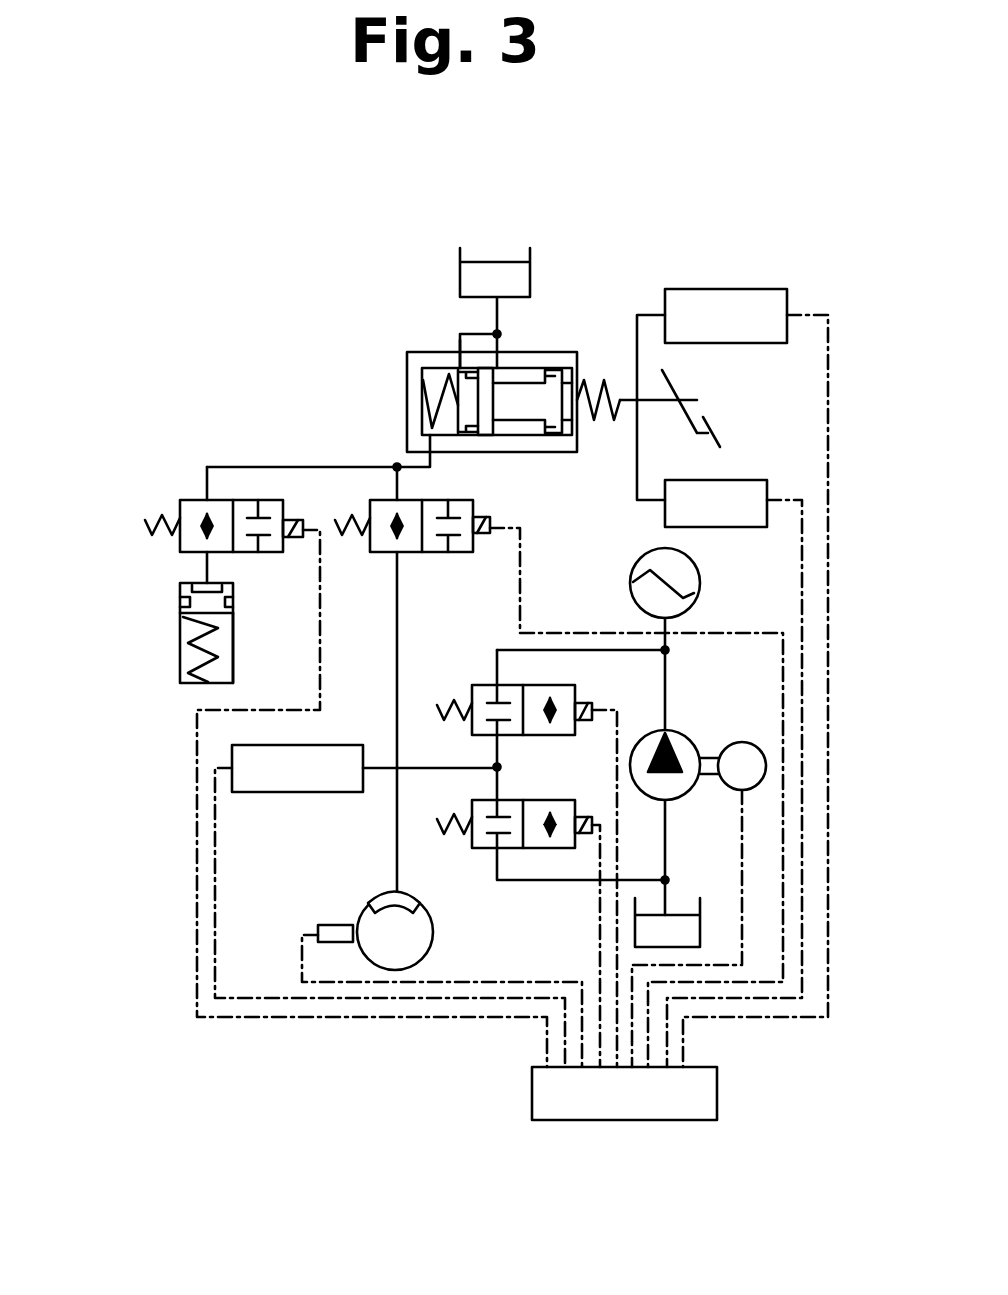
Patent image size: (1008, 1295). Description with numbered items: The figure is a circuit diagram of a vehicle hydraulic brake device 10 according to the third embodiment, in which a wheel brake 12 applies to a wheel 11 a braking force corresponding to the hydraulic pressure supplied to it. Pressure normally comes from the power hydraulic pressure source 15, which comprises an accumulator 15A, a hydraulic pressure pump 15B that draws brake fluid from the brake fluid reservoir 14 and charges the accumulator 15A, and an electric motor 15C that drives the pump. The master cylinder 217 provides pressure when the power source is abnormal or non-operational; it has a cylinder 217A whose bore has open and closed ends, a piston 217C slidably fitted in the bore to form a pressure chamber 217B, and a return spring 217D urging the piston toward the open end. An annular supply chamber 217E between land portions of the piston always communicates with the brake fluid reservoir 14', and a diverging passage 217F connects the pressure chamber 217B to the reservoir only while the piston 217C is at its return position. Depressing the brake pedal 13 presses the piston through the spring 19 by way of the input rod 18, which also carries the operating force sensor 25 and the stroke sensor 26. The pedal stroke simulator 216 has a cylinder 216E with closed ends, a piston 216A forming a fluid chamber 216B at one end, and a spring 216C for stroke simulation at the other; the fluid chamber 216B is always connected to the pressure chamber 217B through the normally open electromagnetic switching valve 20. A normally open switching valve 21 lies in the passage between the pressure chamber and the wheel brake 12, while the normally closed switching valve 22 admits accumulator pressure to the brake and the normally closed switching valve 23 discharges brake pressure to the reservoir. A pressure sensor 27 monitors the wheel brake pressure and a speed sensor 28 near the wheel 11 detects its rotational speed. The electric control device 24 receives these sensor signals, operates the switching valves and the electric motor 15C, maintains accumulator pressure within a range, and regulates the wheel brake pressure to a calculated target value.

The vehicle hydraulic brake device 10 is at (778, 265).
The wheel 11 is at (433, 945).
The wheel brake 12 is at (380, 898).
The brake pedal 13 is at (693, 407).
The brake fluid reservoir 14 is at (763, 922).
The brake fluid reservoir 14' is at (526, 252).
The power hydraulic pressure source 15 is at (610, 627).
The accumulator 15A is at (700, 600).
The hydraulic pressure pump 15B is at (697, 745).
The electric motor 15C is at (765, 773).
The input rod 18 is at (650, 370).
The spring 19 is at (597, 392).
The normally open type electromagnetic switching valve 20 is at (262, 500).
The normally open type electromagnetic switching valve 21 is at (424, 553).
The normally closed type electromagnetic switching valve 22 is at (487, 684).
The normally closed type electromagnetic switching valve 23 is at (521, 794).
The electric control device 24 is at (717, 1097).
The operating force sensor 25 is at (787, 288).
The stroke sensor 26 is at (767, 481).
The pressure sensor 27 is at (278, 793).
The speed sensor 28 is at (327, 930).
The pedal stroke simulator 216 is at (173, 657).
The piston 216A is at (180, 621).
The fluid chamber 216B is at (200, 585).
The spring for stroke simulation 216C is at (214, 667).
The cylinder 216E is at (233, 640).
The master cylinder 217 is at (405, 347).
The cylinder 217A is at (550, 358).
The pressure chamber 217B is at (430, 380).
The piston 217C is at (572, 432).
The return spring 217D is at (443, 408).
The supply chamber 217E is at (512, 375).
The diverging passage 217F is at (460, 333).